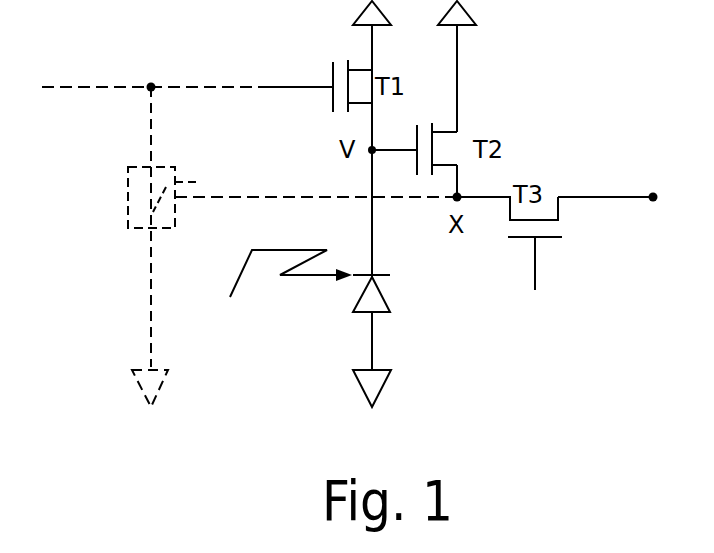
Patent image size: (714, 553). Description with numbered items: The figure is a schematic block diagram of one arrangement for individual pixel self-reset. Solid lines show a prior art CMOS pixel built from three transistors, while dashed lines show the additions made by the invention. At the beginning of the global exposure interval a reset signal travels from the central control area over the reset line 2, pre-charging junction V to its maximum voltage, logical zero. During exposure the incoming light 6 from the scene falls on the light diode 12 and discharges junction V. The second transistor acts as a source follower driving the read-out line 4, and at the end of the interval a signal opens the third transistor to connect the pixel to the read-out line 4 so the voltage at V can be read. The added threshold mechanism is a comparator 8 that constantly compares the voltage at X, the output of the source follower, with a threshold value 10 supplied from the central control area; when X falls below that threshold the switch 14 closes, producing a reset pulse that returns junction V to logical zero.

The reset line 2 is at (292, 87).
The read-out line 4 is at (583, 197).
The incoming light 6 is at (280, 291).
The comparator 8 is at (128, 192).
The threshold value 10 is at (195, 182).
The light diode 12 is at (332, 326).
The switch 14 is at (170, 210).